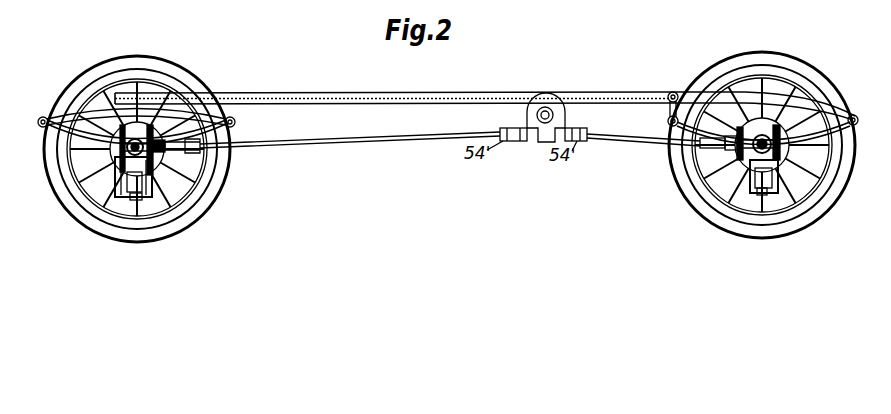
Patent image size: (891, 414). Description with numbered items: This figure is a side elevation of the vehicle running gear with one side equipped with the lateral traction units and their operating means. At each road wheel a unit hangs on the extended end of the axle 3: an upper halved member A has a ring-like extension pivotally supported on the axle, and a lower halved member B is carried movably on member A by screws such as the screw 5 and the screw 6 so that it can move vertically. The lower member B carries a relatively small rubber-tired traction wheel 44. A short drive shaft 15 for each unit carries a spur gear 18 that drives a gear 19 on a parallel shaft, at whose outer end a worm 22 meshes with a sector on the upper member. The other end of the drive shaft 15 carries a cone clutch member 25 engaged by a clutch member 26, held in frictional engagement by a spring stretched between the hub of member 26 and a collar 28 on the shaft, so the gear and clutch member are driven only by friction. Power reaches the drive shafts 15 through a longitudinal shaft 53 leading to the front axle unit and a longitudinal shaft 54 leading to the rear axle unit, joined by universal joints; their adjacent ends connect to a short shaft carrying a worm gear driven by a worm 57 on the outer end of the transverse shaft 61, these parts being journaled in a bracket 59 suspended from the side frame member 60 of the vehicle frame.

The axle 3 is at (121, 170).
The screw 5 is at (126, 149).
The screw 6 is at (853, 99).
The short drive shaft 15 is at (231, 118).
The spur gear 18 is at (748, 170).
The gear 19 is at (172, 124).
The worm 22 is at (136, 140).
The cone clutch member 25 is at (186, 113).
The clutch member 26 is at (200, 112).
The collar 28 is at (204, 144).
The traction wheel 44 is at (137, 200).
The longitudinal shaft 53 is at (632, 140).
The longitudinal shaft 54 is at (366, 138).
The worm 57 is at (541, 142).
The bracket 59 is at (537, 115).
The side frame member 60 is at (467, 92).
The shaft 61 is at (553, 115).
The upper halved member a is at (118, 163).
The lower halved member B is at (118, 180).